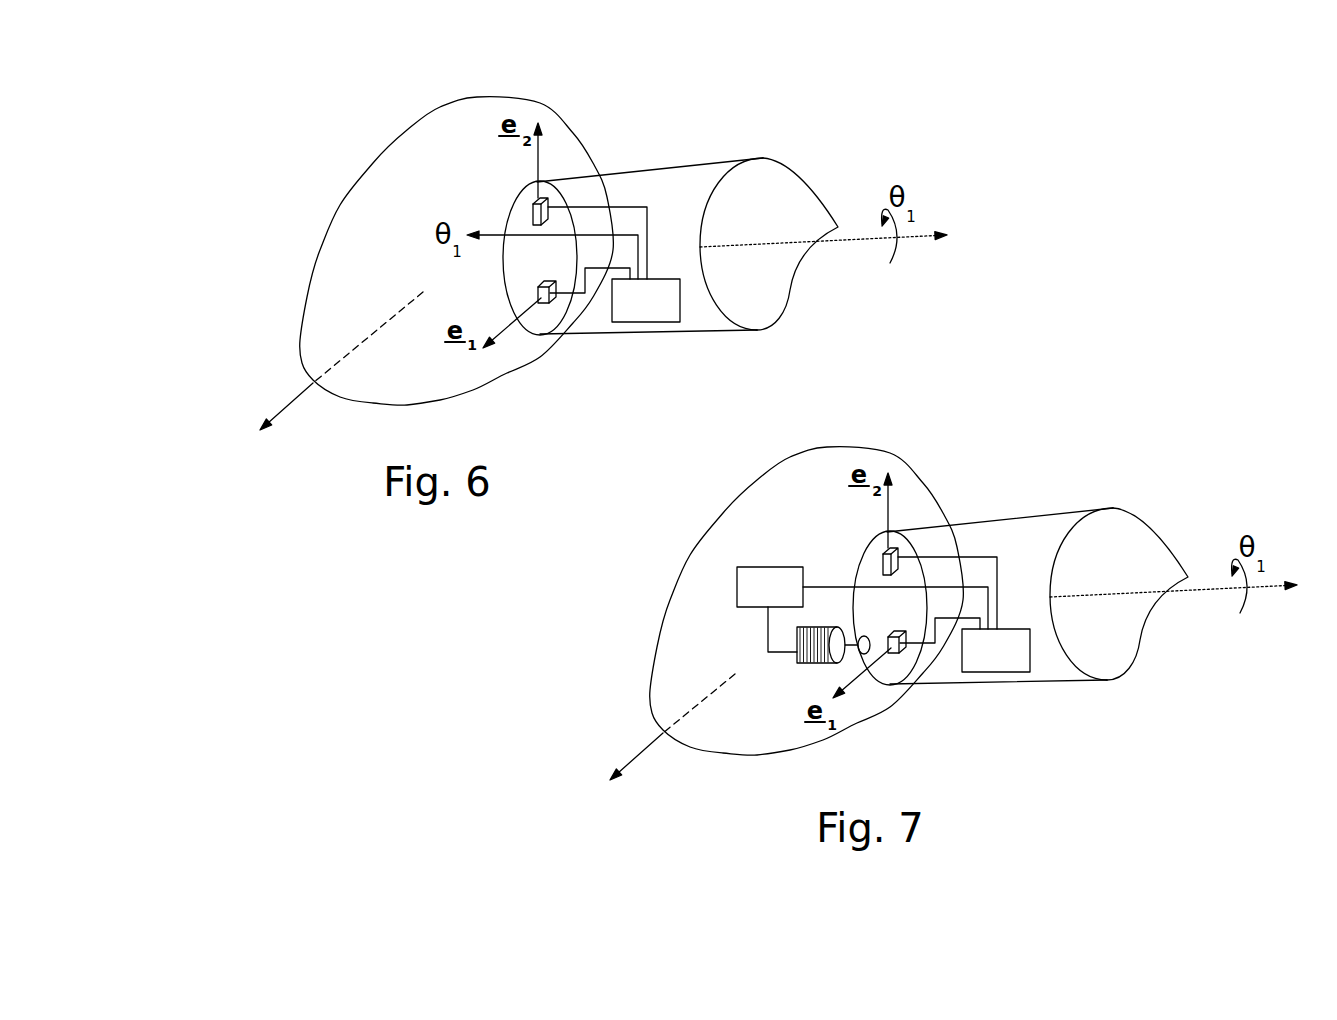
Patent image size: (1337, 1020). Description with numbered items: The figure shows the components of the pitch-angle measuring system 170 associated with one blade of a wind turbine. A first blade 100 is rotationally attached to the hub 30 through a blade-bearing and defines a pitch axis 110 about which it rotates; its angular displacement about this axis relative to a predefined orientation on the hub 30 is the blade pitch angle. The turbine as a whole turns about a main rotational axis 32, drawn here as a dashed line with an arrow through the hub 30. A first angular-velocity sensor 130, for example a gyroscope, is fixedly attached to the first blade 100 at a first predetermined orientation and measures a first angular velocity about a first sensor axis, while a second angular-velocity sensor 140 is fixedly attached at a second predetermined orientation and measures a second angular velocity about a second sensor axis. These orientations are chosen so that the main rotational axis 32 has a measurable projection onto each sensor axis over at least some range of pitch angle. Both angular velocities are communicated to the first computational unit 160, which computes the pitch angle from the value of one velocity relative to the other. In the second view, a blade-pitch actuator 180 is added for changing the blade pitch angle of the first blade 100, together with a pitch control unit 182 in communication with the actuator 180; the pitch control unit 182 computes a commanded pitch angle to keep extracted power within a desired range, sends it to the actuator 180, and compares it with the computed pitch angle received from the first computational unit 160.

In FIG. 6, the hub 30 is at (403, 130).
In FIG. 6, the main rotational axis 32 is at (334, 355).
In FIG. 7, the main rotational axis 32 is at (665, 705).
In FIG. 6, the first blade 100 is at (687, 222).
In FIG. 7, the first blade 100 is at (1037, 572).
In FIG. 6, the pitch axis 110 is at (832, 252).
In FIG. 7, the pitch axis 110 is at (1182, 602).
In FIG. 6, the first angular-velocity sensor 130 is at (576, 334).
In FIG. 7, the first angular-velocity sensor 130 is at (926, 684).
In FIG. 6, the second angular-velocity sensor 140 is at (492, 187).
In FIG. 7, the second angular-velocity sensor 140 is at (842, 537).
In FIG. 6, the first computational unit 160 is at (603, 304).
In FIG. 7, the first computational unit 160 is at (988, 654).
In FIG. 6, the first pitch-angle measuring system 170 is at (656, 93).
In FIG. 7, the first pitch-angle measuring system 170 is at (1006, 443).
In FIG. 7, the blade-pitch actuator 180 is at (785, 651).
In FIG. 7, the pitch control unit 182 is at (813, 581).